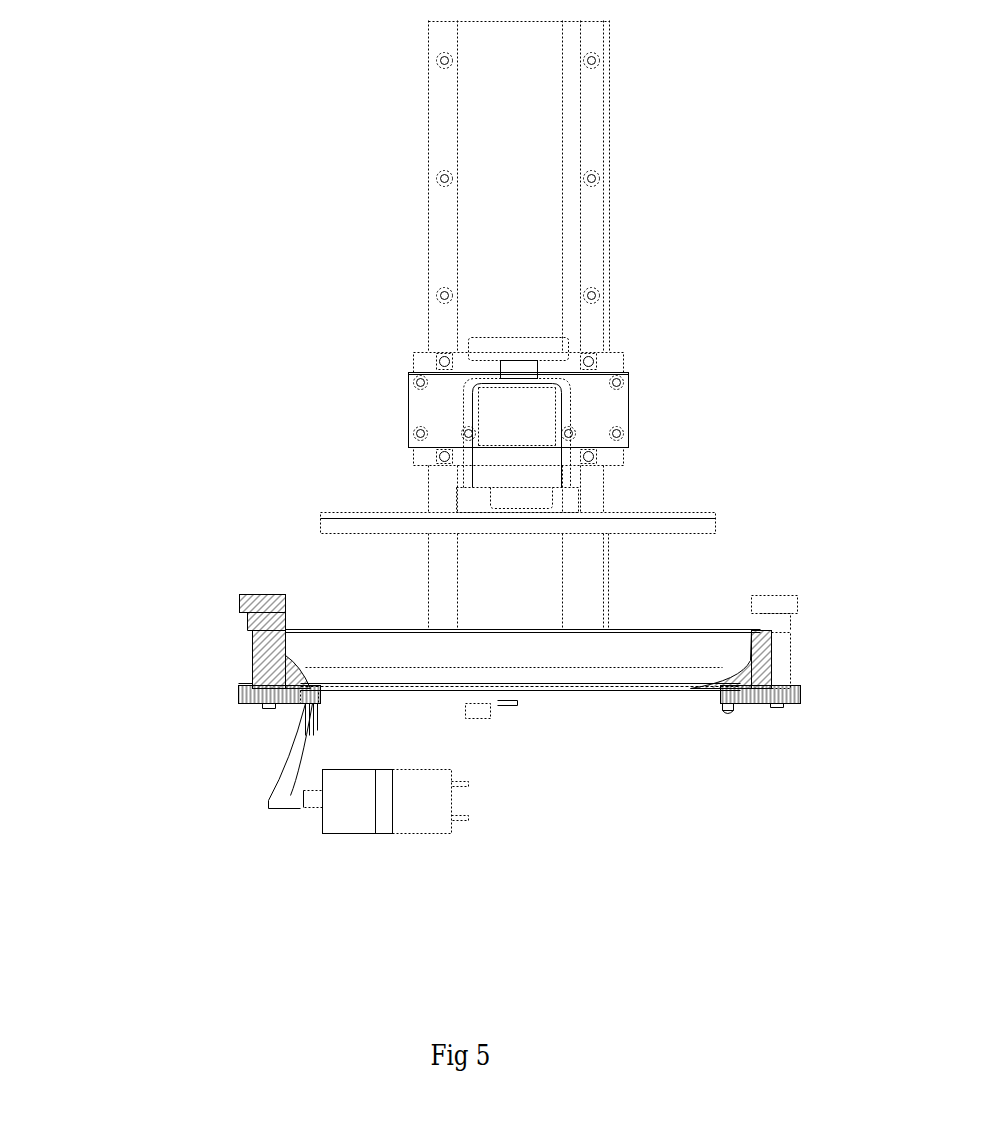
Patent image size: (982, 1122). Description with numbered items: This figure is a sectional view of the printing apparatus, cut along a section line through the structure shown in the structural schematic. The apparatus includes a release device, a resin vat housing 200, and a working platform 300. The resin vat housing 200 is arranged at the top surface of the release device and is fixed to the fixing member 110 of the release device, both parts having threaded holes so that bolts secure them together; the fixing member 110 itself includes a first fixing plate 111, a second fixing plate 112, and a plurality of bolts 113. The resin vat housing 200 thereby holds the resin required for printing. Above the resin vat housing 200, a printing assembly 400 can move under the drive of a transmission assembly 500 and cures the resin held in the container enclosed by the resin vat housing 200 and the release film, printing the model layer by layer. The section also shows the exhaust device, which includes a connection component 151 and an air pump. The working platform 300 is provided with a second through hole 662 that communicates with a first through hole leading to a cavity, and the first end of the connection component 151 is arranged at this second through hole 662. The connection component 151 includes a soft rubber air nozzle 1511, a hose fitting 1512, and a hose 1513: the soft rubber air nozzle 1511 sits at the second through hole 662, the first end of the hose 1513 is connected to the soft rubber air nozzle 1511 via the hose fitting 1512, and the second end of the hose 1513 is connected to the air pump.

The transmission assembly 500 is at (608, 415).
The printing assembly 400 is at (678, 525).
The resin vat housing 200 is at (635, 645).
The working platform 300 is at (740, 703).
The fixing member 110 is at (415, 627).
The bolts 113 is at (270, 598).
The first fixing plate 111 is at (262, 690).
The second fixing plate 112 is at (474, 685).
The connection component 151 is at (249, 806).
The soft rubber air nozzle 1511 is at (305, 720).
The hose fitting 1512 is at (303, 740).
The hose 1513 is at (283, 800).
The second through hole 662 is at (318, 702).